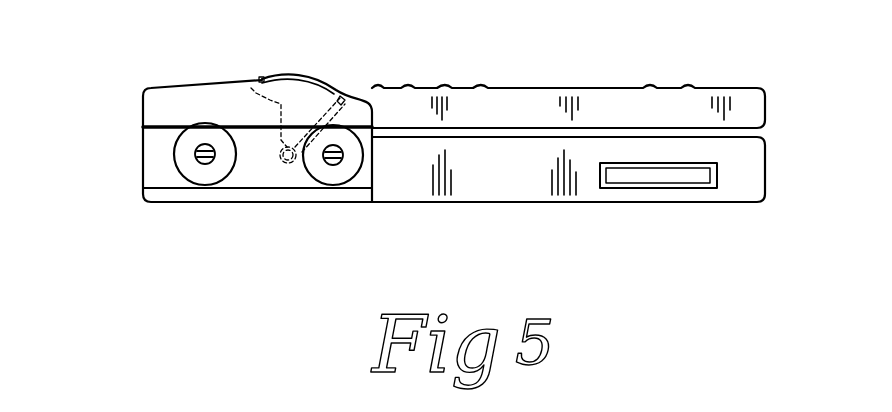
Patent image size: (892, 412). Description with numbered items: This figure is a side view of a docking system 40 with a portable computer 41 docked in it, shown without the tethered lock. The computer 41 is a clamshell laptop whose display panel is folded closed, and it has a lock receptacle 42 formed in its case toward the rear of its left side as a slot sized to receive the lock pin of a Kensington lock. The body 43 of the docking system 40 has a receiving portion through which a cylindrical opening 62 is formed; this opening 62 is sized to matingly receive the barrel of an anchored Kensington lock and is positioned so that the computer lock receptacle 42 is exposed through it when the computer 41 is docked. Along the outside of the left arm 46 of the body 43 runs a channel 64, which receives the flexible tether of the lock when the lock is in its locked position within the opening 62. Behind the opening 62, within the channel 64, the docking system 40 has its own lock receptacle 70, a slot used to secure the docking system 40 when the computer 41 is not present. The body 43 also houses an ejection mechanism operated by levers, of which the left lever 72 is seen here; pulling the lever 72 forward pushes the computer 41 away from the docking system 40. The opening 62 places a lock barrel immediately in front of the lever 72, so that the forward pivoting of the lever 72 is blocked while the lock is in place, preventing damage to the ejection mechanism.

The docking system 40 is at (143, 87).
The portable computer 41 is at (595, 88).
The lock receptacle 42 is at (342, 163).
The body 43 is at (217, 95).
The left arm 46 is at (362, 192).
The opening 62 is at (325, 178).
The channel 64 is at (153, 172).
The lock receptacle 70 is at (200, 153).
The lever 72 is at (305, 77).